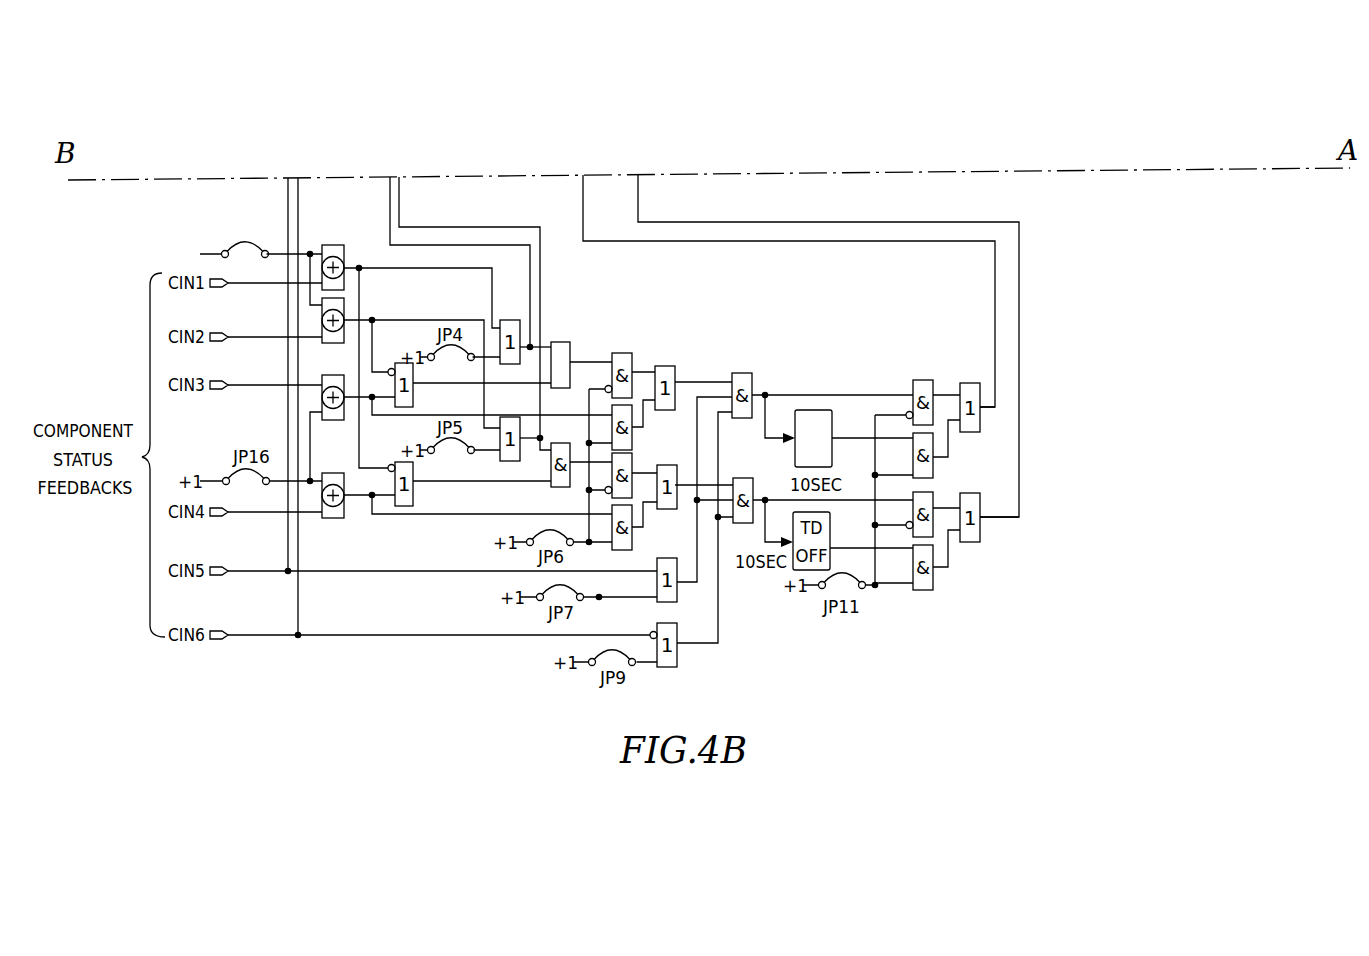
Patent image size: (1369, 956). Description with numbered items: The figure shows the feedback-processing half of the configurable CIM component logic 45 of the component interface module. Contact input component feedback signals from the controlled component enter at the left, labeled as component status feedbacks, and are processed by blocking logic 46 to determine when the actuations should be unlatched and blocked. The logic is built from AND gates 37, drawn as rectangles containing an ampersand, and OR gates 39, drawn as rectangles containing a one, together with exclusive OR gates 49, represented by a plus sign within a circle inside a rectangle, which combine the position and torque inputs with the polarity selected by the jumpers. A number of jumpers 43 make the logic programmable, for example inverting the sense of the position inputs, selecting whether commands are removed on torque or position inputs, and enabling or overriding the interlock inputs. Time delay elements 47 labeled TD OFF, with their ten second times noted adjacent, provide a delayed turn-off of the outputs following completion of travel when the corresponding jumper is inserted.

The jumpers 43 is at (222, 246).
The exclusive OR gates 49 is at (332, 245).
The AND gates 37 is at (557, 342).
The OR gates 39 is at (668, 366).
The configurable CIM component logic 45 is at (1123, 287).
The blocking logic 46 is at (1050, 407).
The time delay elements 47 is at (833, 427).